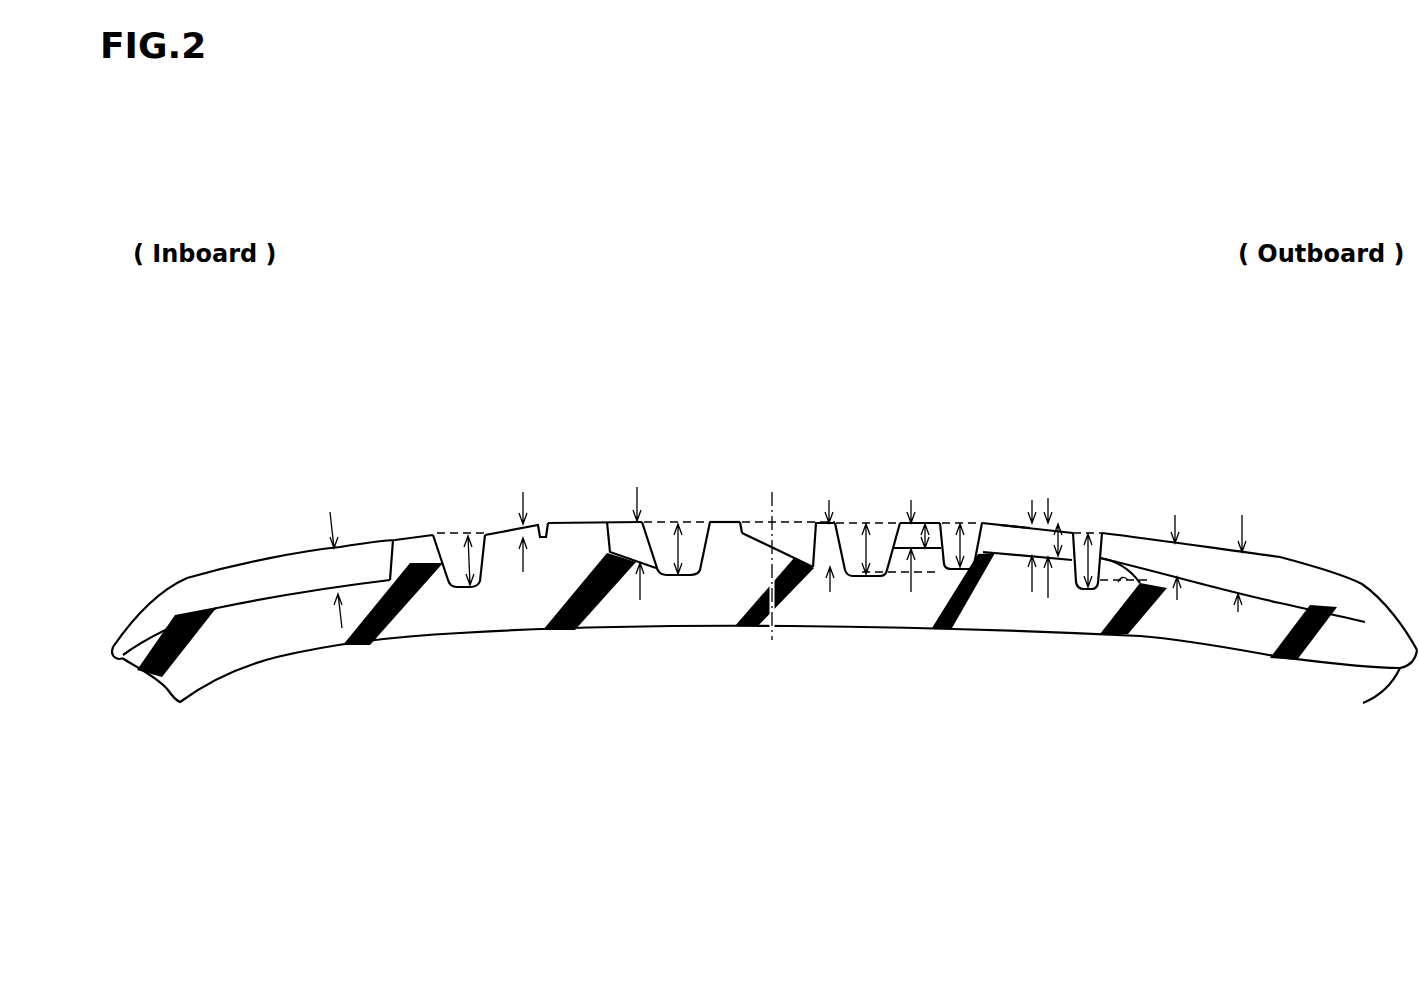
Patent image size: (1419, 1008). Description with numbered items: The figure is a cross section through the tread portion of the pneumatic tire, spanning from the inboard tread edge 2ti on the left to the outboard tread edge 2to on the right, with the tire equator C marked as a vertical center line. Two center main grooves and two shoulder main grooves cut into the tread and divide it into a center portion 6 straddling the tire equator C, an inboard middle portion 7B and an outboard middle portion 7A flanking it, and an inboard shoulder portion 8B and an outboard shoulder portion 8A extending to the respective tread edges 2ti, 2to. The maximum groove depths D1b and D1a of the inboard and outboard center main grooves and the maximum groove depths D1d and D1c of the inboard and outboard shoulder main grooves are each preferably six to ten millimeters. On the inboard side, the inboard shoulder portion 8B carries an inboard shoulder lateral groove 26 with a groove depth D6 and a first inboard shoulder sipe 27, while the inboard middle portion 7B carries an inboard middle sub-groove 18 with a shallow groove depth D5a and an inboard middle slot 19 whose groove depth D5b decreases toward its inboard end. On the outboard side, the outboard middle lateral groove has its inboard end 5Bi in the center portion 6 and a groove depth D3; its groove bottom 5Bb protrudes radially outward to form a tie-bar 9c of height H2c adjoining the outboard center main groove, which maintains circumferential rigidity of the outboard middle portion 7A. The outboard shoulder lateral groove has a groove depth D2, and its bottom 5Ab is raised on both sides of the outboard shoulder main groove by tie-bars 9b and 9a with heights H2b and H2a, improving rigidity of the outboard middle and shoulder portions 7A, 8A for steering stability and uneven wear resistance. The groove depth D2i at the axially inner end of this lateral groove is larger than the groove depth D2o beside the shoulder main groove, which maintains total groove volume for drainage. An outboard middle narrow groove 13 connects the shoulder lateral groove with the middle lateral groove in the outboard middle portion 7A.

The inboard tread edge 2ti is at (186, 578).
The outboard tread edge 2to is at (1357, 581).
The inboard shoulder lateral groove 26 is at (271, 585).
The first inboard shoulder sipe 27 is at (426, 549).
The inboard shoulder portion 8B is at (382, 486).
The outboard shoulder portion 8A is at (1219, 489).
The inboard end of outboard middle lateral groove 5Bi is at (757, 538).
The groove bottom of outboard middle lateral groove 5Bb is at (918, 582).
The bottom of outboard shoulder lateral groove 5Ab is at (1135, 592).
The center portion 6 is at (785, 481).
The inboard middle portion 7B is at (599, 487).
The outboard middle portion 7A is at (1006, 491).
The tie-bar 9a is at (1150, 530).
The tie-bar 9b is at (1067, 530).
The tie-bar 9c is at (930, 528).
The outboard middle narrow groove 13 is at (1015, 513).
The inboard middle sub-groove 18 is at (546, 523).
The inboard middle slot 19 is at (628, 542).
The tire equator C is at (769, 586).
The groove depth of inboard shoulder lateral groove D6 is at (334, 630).
The maximum groove depth of inboard shoulder main groove D1d is at (468, 590).
The maximum groove depth of inboard center main groove D1b is at (670, 590).
The maximum groove depth of outboard center main groove D1a is at (862, 592).
The maximum groove depth of outboard shoulder main groove D1c is at (1092, 594).
The groove depth of inboard middle sub-groove D5a is at (523, 575).
The groove depth of inboard middle slot D5b is at (612, 602).
The groove depth of outboard middle lateral groove D3 is at (795, 594).
The groove depth at axially inner end D2i is at (962, 594).
The groove depth by outboard shoulder main groove D2o is at (1030, 588).
The groove depth of outboard shoulder lateral groove D2 is at (1265, 602).
The height of tie-bar H2a is at (1177, 594).
The height of tie-bar H2b is at (1070, 600).
The height of tie-bar H2c is at (845, 600).